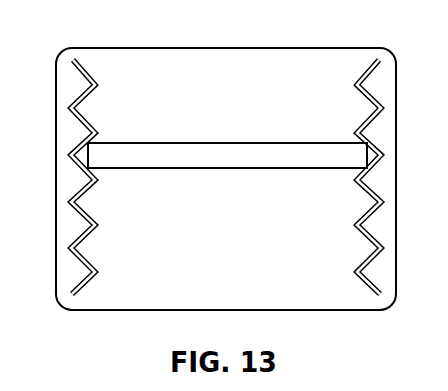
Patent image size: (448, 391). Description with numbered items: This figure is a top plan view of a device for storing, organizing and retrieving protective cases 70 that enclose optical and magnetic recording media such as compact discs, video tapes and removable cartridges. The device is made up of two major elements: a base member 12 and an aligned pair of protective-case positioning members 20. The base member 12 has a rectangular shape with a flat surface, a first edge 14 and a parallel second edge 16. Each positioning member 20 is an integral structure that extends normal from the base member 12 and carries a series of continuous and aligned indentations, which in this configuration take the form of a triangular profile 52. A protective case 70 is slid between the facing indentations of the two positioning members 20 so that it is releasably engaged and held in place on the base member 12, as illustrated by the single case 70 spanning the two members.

The base member 12 is at (147, 70).
The first edge 14 is at (56, 227).
The second edge 16 is at (396, 183).
The protective-case positioning member 20 is at (226, 179).
The triangular profile 52 is at (368, 76).
The protective case 70 is at (281, 158).